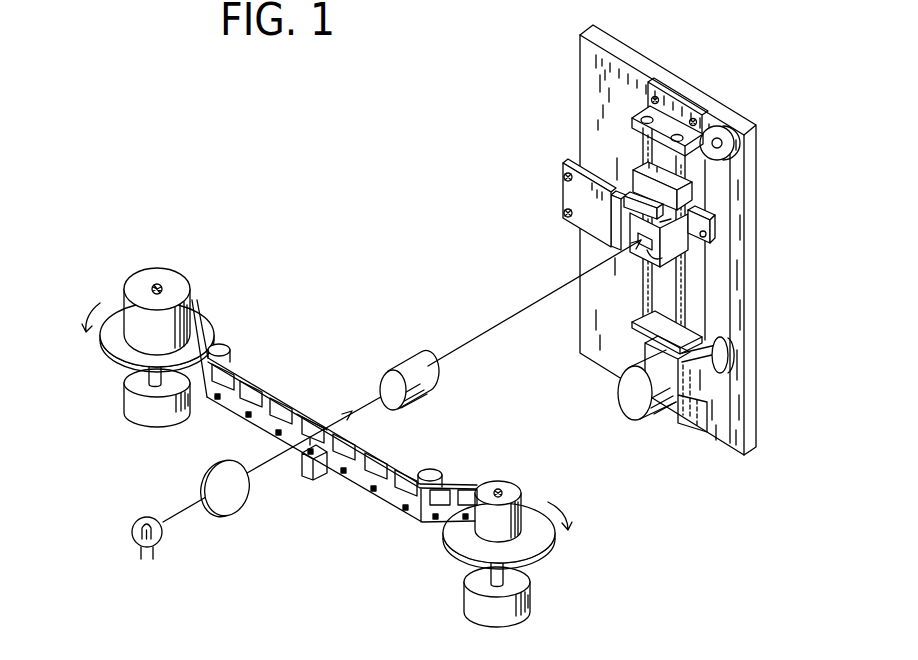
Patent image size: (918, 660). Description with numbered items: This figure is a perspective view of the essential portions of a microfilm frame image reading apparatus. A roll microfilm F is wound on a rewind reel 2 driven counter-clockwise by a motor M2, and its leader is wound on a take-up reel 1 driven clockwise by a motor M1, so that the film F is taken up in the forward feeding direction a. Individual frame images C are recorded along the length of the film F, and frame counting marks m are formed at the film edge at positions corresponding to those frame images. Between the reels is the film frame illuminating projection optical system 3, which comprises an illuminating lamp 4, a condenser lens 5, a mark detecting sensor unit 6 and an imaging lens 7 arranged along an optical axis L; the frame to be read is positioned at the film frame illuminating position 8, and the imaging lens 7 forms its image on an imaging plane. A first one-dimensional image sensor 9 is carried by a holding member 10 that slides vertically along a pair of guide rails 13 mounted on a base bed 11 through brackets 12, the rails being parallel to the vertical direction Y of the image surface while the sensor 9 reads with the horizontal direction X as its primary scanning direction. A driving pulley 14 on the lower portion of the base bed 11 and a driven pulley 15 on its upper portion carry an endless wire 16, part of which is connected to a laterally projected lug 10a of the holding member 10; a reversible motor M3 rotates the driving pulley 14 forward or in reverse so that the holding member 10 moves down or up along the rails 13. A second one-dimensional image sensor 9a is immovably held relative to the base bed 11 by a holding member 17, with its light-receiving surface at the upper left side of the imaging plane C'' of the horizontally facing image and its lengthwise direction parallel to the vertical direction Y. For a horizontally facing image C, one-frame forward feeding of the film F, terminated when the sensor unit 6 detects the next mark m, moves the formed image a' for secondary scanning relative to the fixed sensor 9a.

The take-up reel 1 is at (533, 538).
The rewind reel 2 is at (117, 340).
The film frame illuminating projection optical system 3 is at (212, 515).
The illuminating lamp 4 is at (132, 537).
The condenser lens 5 is at (203, 480).
The mark detecting sensor unit 6 is at (310, 478).
The imaging lens 7 is at (395, 370).
The film frame illuminating position 8 is at (328, 410).
The first one-dimensional image sensor 9 is at (657, 203).
The second one-dimensional image sensor 9a is at (610, 213).
The holding member 10 is at (638, 168).
The laterally projected lug 10a is at (716, 232).
The base bed 11 is at (752, 150).
The brackets 12 is at (668, 128).
The guide rails 13 is at (644, 303).
The driving pulley 14 is at (723, 372).
The driven pulley 15 is at (720, 124).
The endless wire 16 is at (731, 208).
The holding member 17 is at (592, 228).
The motor M1 is at (522, 600).
The motor M2 is at (133, 403).
The reversible motor M3 is at (638, 418).
The roll microfilm F is at (269, 392).
The frame images C is at (344, 425).
The forward feeding a is at (315, 400).
The movement for secondary scanning a' is at (689, 267).
The frame counting marks m is at (373, 490).
The optical axis L is at (488, 330).
The horizontal direction X— X is at (642, 200).
The vertical direction Y— Y is at (613, 218).
The imaging plane of the horizontally facing image C'' is at (632, 300).